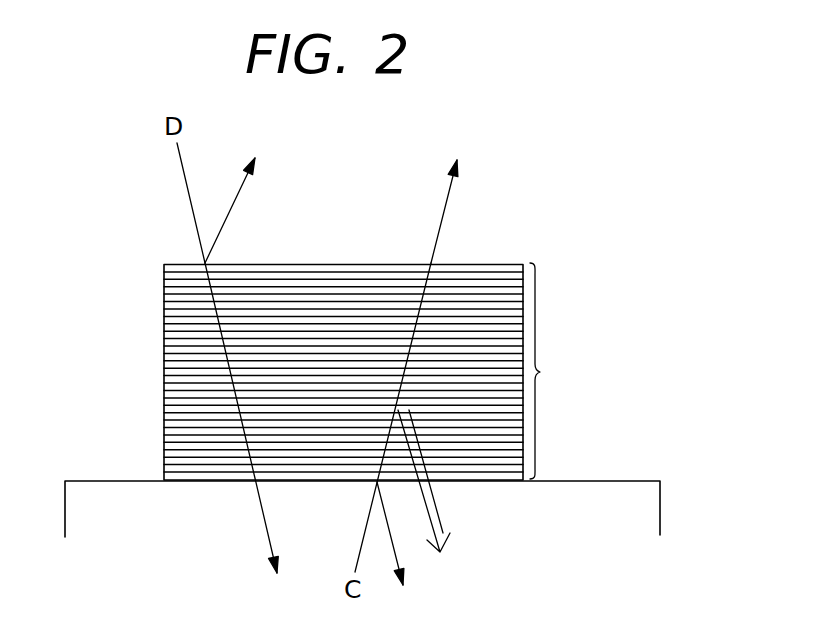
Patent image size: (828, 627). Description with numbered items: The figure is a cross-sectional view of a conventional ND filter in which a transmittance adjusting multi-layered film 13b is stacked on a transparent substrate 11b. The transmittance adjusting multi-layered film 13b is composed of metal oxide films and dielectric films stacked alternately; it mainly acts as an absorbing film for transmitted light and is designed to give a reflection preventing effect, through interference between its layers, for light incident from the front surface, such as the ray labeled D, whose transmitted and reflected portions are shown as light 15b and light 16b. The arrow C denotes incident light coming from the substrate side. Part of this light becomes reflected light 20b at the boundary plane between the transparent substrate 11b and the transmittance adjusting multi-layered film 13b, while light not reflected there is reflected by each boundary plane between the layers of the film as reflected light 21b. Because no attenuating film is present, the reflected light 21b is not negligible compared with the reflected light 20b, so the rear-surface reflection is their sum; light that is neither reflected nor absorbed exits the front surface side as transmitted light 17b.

The transparent substrate 11b is at (620, 481).
The transmittance adjusting multi-layered film 13b is at (540, 372).
The transmitted light 15b is at (265, 527).
The reflected light 16b is at (232, 210).
The transmitted light 17b is at (450, 202).
The reflected light 20b is at (395, 550).
The reflected light 21b is at (443, 517).